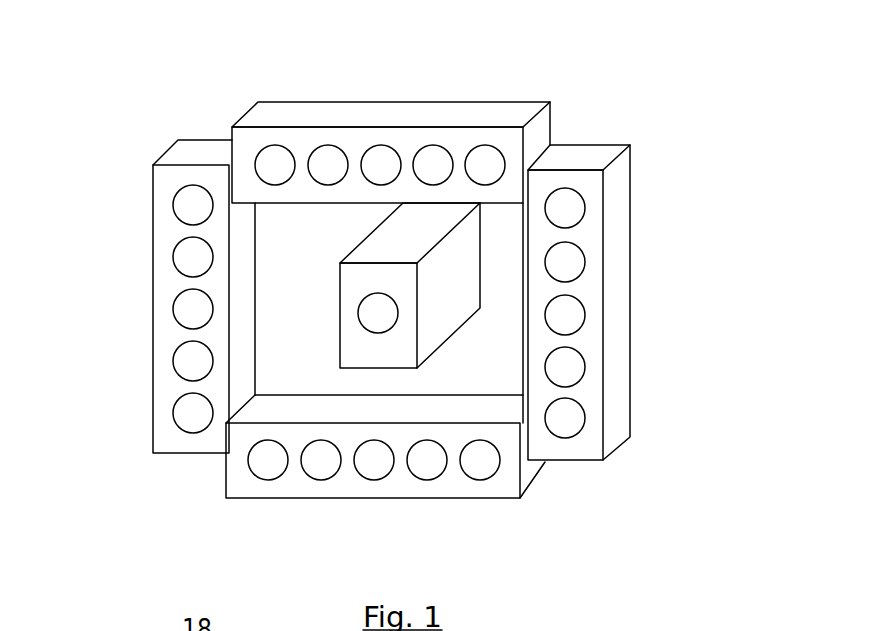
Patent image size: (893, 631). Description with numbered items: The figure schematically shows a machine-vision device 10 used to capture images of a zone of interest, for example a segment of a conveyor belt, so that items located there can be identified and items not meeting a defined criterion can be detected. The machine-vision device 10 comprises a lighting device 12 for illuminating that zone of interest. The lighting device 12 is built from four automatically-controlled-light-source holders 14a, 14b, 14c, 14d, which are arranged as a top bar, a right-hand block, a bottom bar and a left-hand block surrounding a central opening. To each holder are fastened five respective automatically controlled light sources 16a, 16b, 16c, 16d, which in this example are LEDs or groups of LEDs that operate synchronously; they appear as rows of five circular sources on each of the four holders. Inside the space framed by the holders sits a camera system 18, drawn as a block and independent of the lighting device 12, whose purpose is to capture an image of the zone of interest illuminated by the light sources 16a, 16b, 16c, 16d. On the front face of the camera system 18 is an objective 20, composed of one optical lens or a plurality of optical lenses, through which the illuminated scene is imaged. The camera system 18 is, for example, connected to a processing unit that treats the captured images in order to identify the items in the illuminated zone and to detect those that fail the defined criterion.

The machine-vision device 10 is at (226, 104).
The lighting device 12 is at (654, 143).
The automatically-controlled-light-source holder 14a is at (508, 113).
The automatically-controlled-light-source holder 14b is at (622, 185).
The automatically-controlled-light-source holder 14c is at (497, 485).
The automatically-controlled-light-source holder 14d is at (168, 182).
The automatically controlled light sources 16a is at (435, 150).
The automatically controlled light sources 16b is at (578, 258).
The automatically controlled light sources 16c is at (425, 462).
The automatically controlled light sources 16d is at (185, 258).
The camera system 18 is at (352, 270).
The objective 20 is at (369, 316).